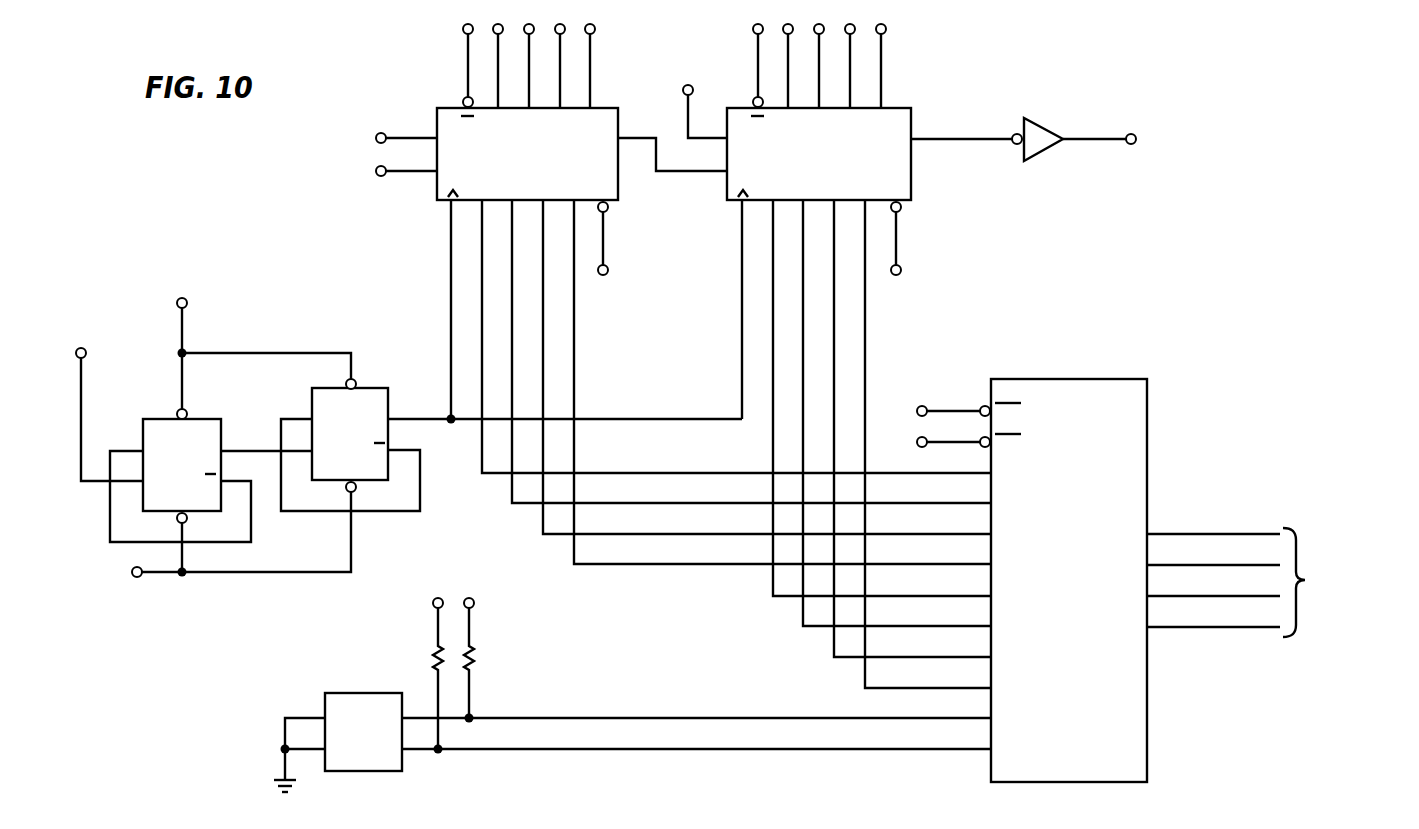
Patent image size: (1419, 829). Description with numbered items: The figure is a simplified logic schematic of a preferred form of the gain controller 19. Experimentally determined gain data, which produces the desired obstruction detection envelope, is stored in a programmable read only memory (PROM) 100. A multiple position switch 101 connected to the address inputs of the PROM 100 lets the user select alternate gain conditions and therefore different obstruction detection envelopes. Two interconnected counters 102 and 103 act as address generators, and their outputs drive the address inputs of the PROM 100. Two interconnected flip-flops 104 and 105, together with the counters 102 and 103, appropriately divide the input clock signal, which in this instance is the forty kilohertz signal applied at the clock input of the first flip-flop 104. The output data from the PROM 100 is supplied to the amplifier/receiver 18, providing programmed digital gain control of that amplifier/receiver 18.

The programmable read only memory (PROM) 100 is at (1082, 386).
The multiple position switch 101 is at (356, 700).
The counter 102 is at (437, 197).
The counter 103 is at (727, 197).
The flip-flop 104 is at (203, 425).
The flip-flop 105 is at (369, 395).
The gain controller 19 is at (675, 379).
The amplifier/receiver 18 is at (1342, 582).